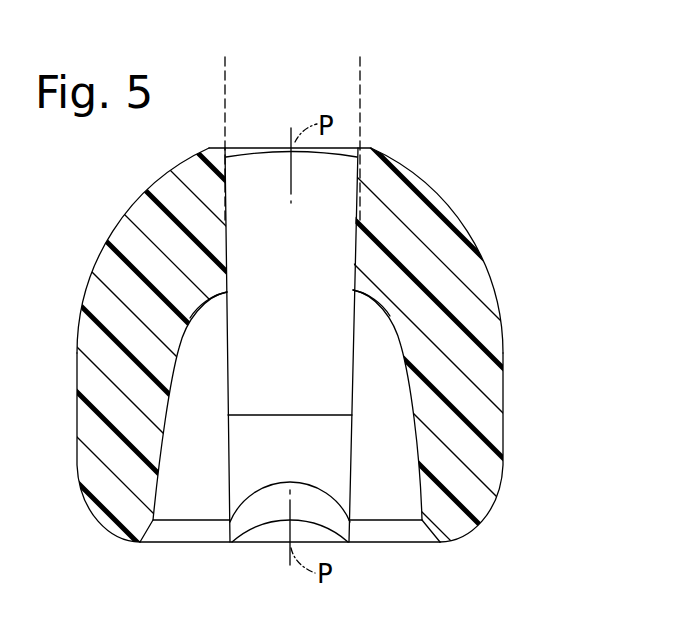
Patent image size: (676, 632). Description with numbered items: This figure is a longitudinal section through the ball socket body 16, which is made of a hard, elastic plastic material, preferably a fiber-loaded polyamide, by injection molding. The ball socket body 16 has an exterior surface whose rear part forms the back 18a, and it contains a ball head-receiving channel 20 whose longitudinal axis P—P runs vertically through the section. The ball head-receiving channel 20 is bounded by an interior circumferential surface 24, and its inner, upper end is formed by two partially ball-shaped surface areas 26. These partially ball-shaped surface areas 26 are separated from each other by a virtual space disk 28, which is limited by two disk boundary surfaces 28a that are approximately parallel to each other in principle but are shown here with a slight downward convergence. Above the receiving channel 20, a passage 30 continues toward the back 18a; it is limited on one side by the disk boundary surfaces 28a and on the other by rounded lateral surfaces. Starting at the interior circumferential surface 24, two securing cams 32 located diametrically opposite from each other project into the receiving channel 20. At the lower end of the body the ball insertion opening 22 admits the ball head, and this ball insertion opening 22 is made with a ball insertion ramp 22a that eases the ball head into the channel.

The ball socket body 16 is at (460, 304).
The back 18a is at (444, 201).
The ball head-receiving channel 20 is at (388, 392).
The ball insertion opening 22 is at (392, 534).
The ball insertion ramp 22a is at (268, 532).
The interior circumferential surface 24 is at (367, 372).
The partially ball-shaped surface areas 26 is at (368, 304).
The virtual space disk 28 is at (360, 62).
The disk boundary surfaces 28a is at (359, 102).
The passage 30 is at (340, 210).
The securing cams 32 is at (266, 423).